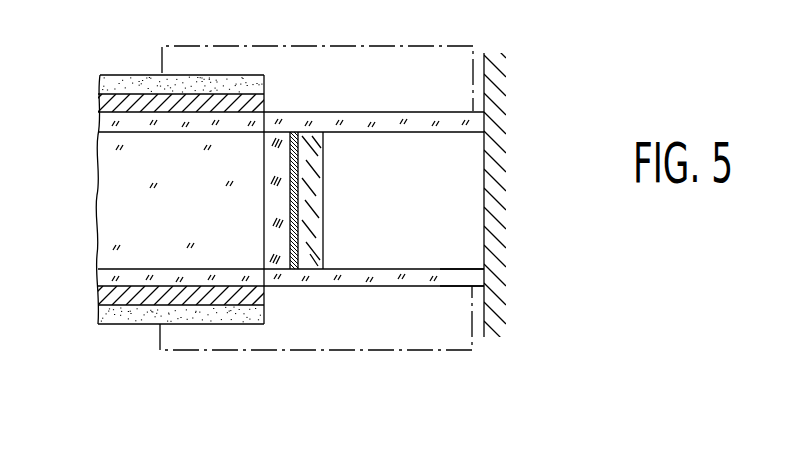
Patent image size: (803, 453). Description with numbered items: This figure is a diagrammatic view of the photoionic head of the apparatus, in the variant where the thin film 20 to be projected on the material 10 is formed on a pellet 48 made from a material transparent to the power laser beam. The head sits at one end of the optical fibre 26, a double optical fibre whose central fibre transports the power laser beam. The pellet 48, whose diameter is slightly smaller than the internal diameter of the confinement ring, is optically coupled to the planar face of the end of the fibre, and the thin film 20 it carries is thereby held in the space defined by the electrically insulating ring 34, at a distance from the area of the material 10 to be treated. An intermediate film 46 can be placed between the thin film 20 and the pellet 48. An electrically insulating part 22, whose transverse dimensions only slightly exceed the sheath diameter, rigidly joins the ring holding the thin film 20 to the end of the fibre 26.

The material to be treated 10 is at (490, 78).
The thin film 20 is at (313, 173).
The electrically insulating part 22 is at (325, 45).
The optical fibre 26 is at (91, 157).
The electrically insulating ring 34 is at (460, 275).
The intermediate film 46 is at (294, 228).
The pellet 48 is at (287, 270).